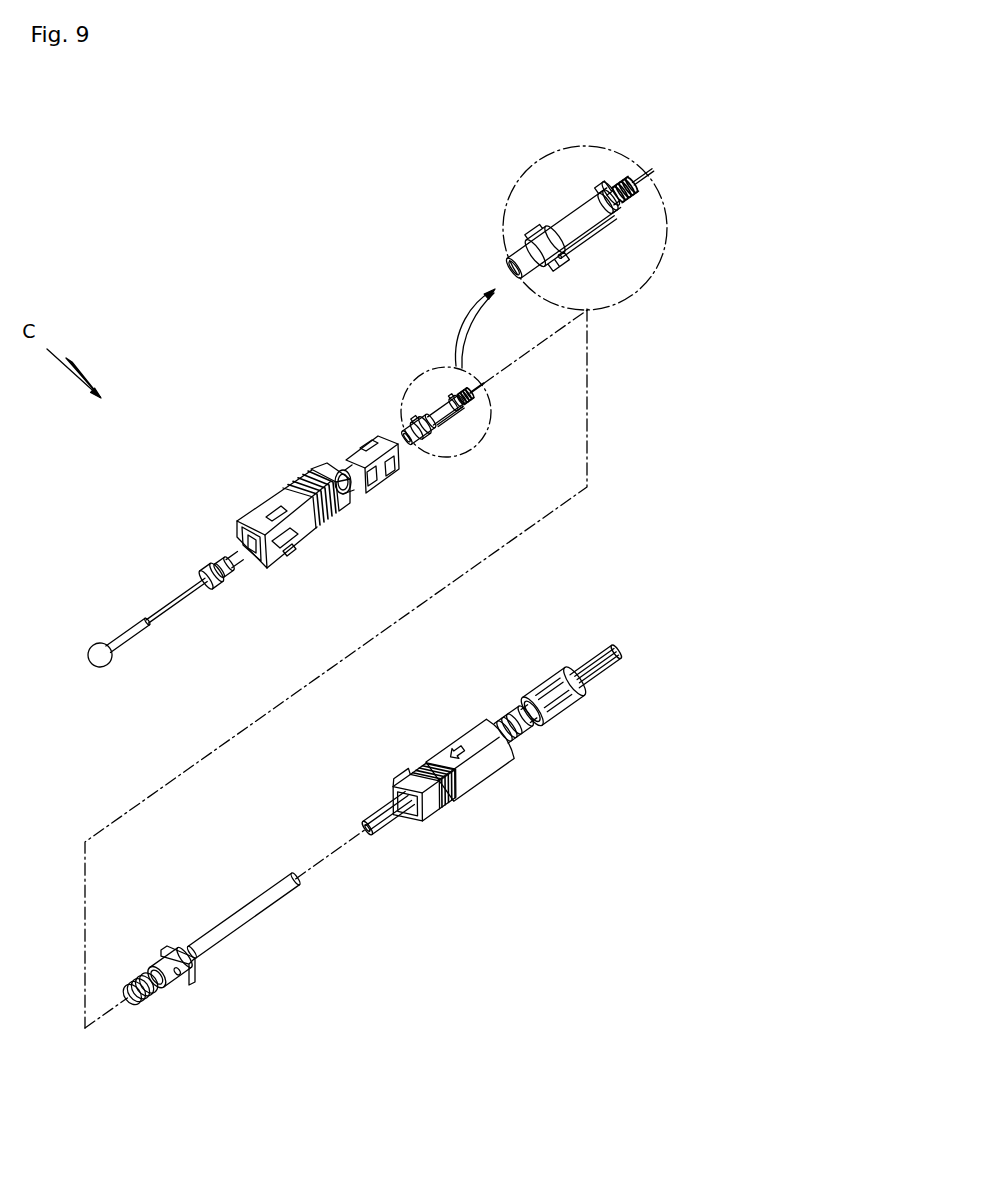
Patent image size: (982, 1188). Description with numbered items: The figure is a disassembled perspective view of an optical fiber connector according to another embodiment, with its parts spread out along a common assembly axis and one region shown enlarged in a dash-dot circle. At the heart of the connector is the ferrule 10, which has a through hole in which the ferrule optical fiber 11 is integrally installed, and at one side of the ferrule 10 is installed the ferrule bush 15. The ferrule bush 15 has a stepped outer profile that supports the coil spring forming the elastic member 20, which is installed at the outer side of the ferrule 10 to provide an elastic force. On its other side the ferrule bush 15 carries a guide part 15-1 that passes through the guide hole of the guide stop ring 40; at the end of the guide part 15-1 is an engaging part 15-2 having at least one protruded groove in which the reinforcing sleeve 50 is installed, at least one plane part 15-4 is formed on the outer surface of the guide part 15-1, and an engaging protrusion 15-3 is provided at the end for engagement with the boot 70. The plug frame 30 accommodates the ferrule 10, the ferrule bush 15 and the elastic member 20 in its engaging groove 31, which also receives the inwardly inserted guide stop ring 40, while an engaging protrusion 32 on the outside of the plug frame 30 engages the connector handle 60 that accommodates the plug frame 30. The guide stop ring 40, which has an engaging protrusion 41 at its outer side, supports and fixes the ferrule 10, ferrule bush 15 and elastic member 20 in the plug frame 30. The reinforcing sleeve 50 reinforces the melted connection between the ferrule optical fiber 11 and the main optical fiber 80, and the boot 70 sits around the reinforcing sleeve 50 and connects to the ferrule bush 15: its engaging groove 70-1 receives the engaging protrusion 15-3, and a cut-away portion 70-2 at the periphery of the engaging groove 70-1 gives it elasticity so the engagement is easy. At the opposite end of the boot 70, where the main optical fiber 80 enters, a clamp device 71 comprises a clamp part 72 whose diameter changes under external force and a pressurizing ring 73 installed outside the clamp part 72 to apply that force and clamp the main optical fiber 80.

The ferrule 10 is at (417, 430).
The ferrule optical fiber 11 is at (458, 360).
The ferrule bush 15 is at (437, 403).
The guide part 15-1 is at (447, 430).
The engaging part 15-2 is at (472, 402).
The engaging protrusion 15-3 is at (437, 425).
The plane part 15-4 is at (594, 234).
The elastic member 20 is at (135, 1005).
The plug frame 30 is at (357, 456).
The engaging groove 31 is at (400, 470).
The engaging protrusion 32 is at (372, 480).
The guide stop ring 40 is at (190, 967).
The engaging protrusion 41 is at (175, 980).
The reinforcing sleeve 50 is at (245, 922).
The connector handle 60 is at (258, 513).
The boot 70 is at (467, 790).
The engaging groove 70-1 is at (407, 778).
The cut-away portion 70-2 is at (427, 786).
The clamp device 71 is at (588, 827).
The clamp part 72 is at (525, 733).
The pressurizing ring 73 is at (558, 711).
The main optical fiber 80 is at (382, 833).